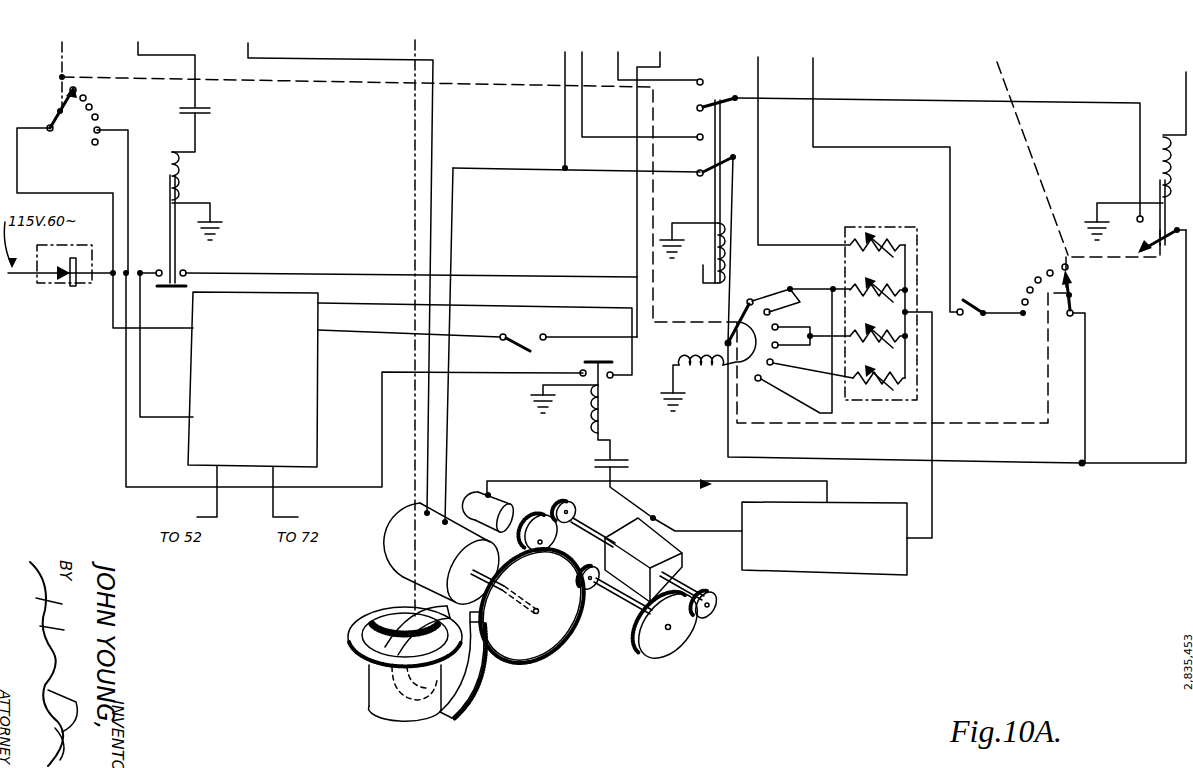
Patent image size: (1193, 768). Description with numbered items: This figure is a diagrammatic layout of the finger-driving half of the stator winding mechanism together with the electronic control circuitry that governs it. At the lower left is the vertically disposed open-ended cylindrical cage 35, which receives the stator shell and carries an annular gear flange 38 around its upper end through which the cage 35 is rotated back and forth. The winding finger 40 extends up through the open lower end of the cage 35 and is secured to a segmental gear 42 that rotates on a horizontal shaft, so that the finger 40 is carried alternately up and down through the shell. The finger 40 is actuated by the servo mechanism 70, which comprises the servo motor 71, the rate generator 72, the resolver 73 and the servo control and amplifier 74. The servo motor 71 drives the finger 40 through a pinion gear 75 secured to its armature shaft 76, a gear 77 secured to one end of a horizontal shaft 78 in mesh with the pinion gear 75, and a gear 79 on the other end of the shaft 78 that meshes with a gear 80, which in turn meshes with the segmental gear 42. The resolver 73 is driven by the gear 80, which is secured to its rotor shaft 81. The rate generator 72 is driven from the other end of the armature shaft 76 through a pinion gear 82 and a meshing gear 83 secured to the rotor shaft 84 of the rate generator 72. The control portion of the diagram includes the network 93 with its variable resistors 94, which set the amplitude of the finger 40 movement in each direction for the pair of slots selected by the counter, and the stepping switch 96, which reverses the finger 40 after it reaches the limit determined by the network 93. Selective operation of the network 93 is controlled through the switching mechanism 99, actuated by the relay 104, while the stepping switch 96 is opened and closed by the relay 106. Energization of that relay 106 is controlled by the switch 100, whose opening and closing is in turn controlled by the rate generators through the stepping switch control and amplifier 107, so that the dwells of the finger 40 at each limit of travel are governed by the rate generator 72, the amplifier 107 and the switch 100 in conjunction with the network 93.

The cylindrical cage 35 is at (368, 691).
The annular gear flange 38 is at (348, 640).
The winding finger 40 is at (393, 612).
The segmental gear 42 is at (466, 701).
The servo mechanism 70 is at (584, 660).
The servo motor 71 is at (657, 550).
The rate generator 72 is at (499, 503).
The resolver 73 is at (384, 553).
The servo control and amplifier 74 is at (837, 576).
The pinion gear 75 is at (722, 602).
The armature shaft 76 is at (597, 533).
The gear 77 is at (684, 650).
The horizontal shaft 78 is at (625, 606).
The gear 79 is at (592, 566).
The gear 80 is at (537, 666).
The rotor shaft 81 is at (489, 568).
The pinion gear 82 is at (572, 516).
The meshing gear 83 is at (564, 507).
The rotor shaft 84 is at (526, 516).
The network 93 is at (874, 228).
The variable resistors 94 is at (888, 325).
The stepping switch 96 is at (740, 138).
The switching mechanism 99 is at (808, 306).
The switch 100 is at (520, 330).
The relay 104 is at (705, 378).
The relay 106 is at (708, 245).
The stepping switch control and amplifier 107 is at (278, 292).